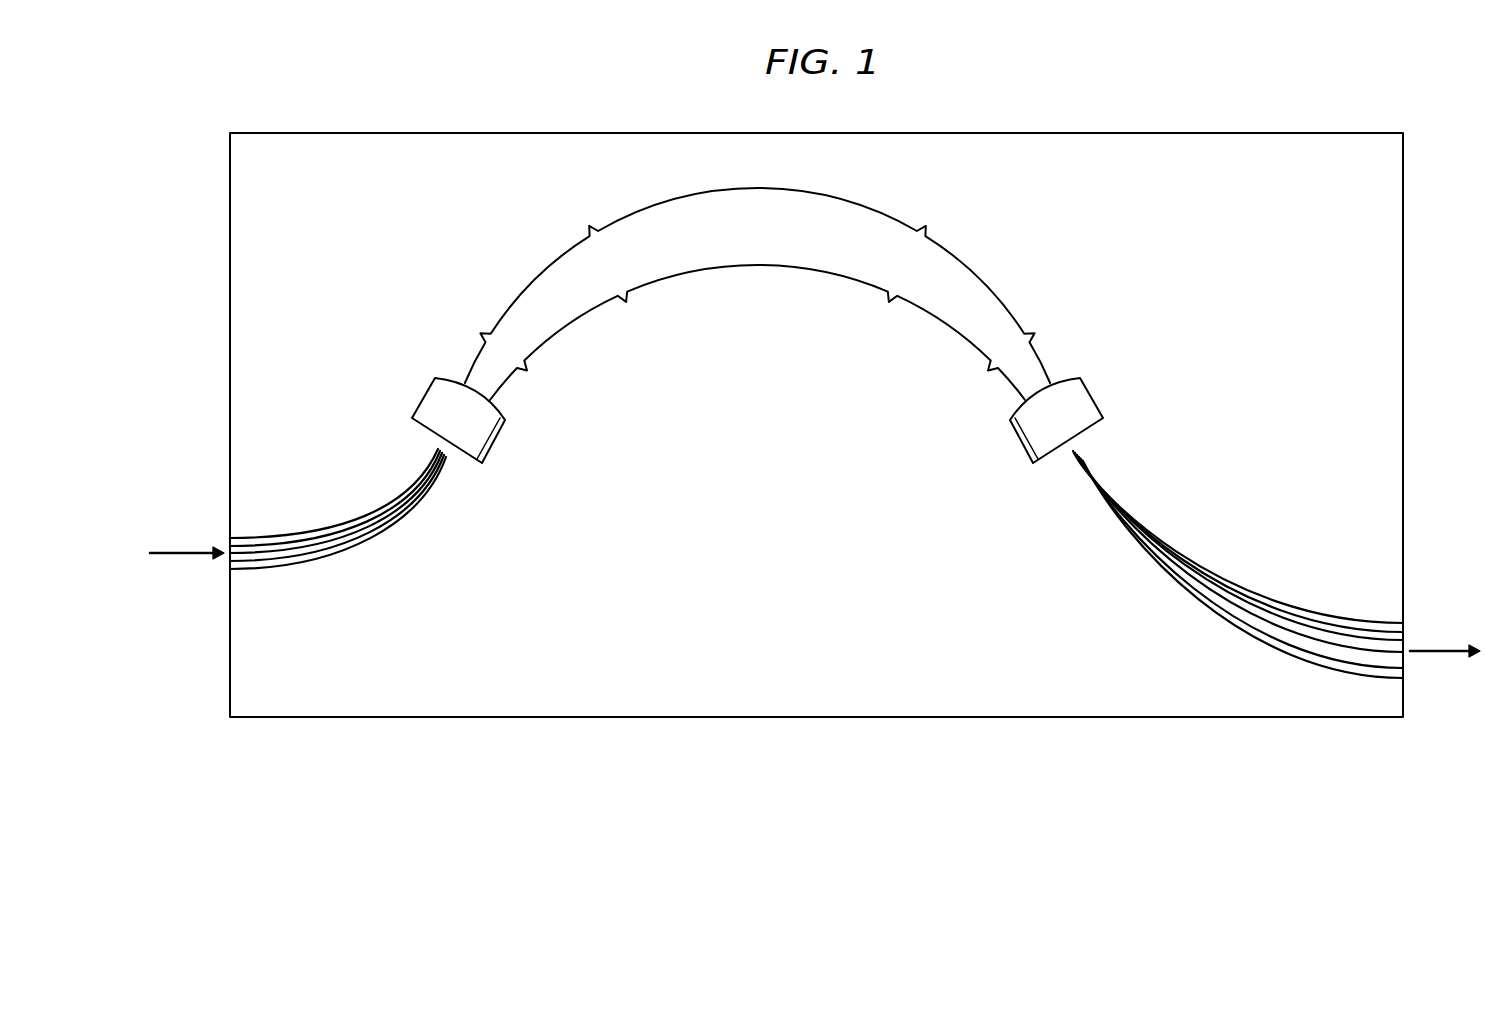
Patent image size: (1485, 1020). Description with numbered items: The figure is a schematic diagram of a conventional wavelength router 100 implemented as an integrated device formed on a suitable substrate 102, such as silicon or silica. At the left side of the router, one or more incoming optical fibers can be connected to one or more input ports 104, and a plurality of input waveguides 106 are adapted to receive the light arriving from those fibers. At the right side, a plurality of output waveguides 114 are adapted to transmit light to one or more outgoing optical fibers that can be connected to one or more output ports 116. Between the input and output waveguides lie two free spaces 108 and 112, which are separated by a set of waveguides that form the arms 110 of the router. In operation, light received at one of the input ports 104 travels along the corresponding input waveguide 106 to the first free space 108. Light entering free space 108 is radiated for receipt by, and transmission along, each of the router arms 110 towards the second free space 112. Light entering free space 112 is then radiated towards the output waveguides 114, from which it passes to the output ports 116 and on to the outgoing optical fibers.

The wavelength router 100 is at (1157, 133).
The substrate 102 is at (1375, 184).
The input ports 104 is at (202, 534).
The input waveguides 106 is at (367, 530).
The free space 108 is at (425, 399).
The arms 110 is at (760, 266).
The free space 112 is at (1090, 399).
The output waveguides 114 is at (1160, 538).
The output ports 116 is at (1432, 621).